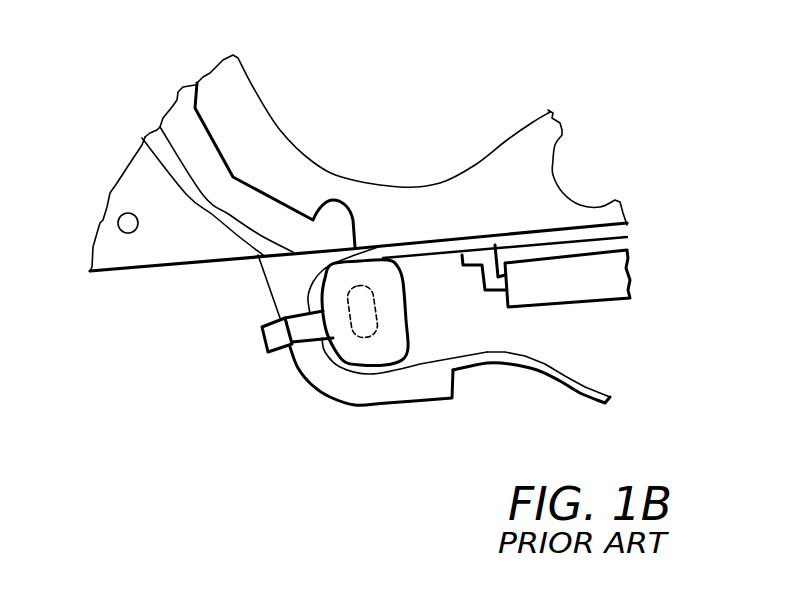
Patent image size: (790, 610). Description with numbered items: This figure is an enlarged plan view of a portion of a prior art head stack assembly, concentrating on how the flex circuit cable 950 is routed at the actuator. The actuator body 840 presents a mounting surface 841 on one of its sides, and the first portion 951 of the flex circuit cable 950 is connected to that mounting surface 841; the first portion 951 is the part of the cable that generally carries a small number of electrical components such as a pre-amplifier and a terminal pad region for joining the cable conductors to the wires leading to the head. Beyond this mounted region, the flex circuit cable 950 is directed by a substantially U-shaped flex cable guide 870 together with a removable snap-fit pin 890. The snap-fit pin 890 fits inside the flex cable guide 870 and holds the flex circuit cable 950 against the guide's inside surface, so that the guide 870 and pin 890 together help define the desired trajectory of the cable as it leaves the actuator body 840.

The actuator body 840 is at (220, 95).
The mounting surface 841 is at (420, 245).
The flex cable guide 870 is at (385, 403).
The snap-fit pin 890 is at (399, 313).
The flex circuit cable 950 is at (545, 360).
The first portion 951 is at (512, 237).